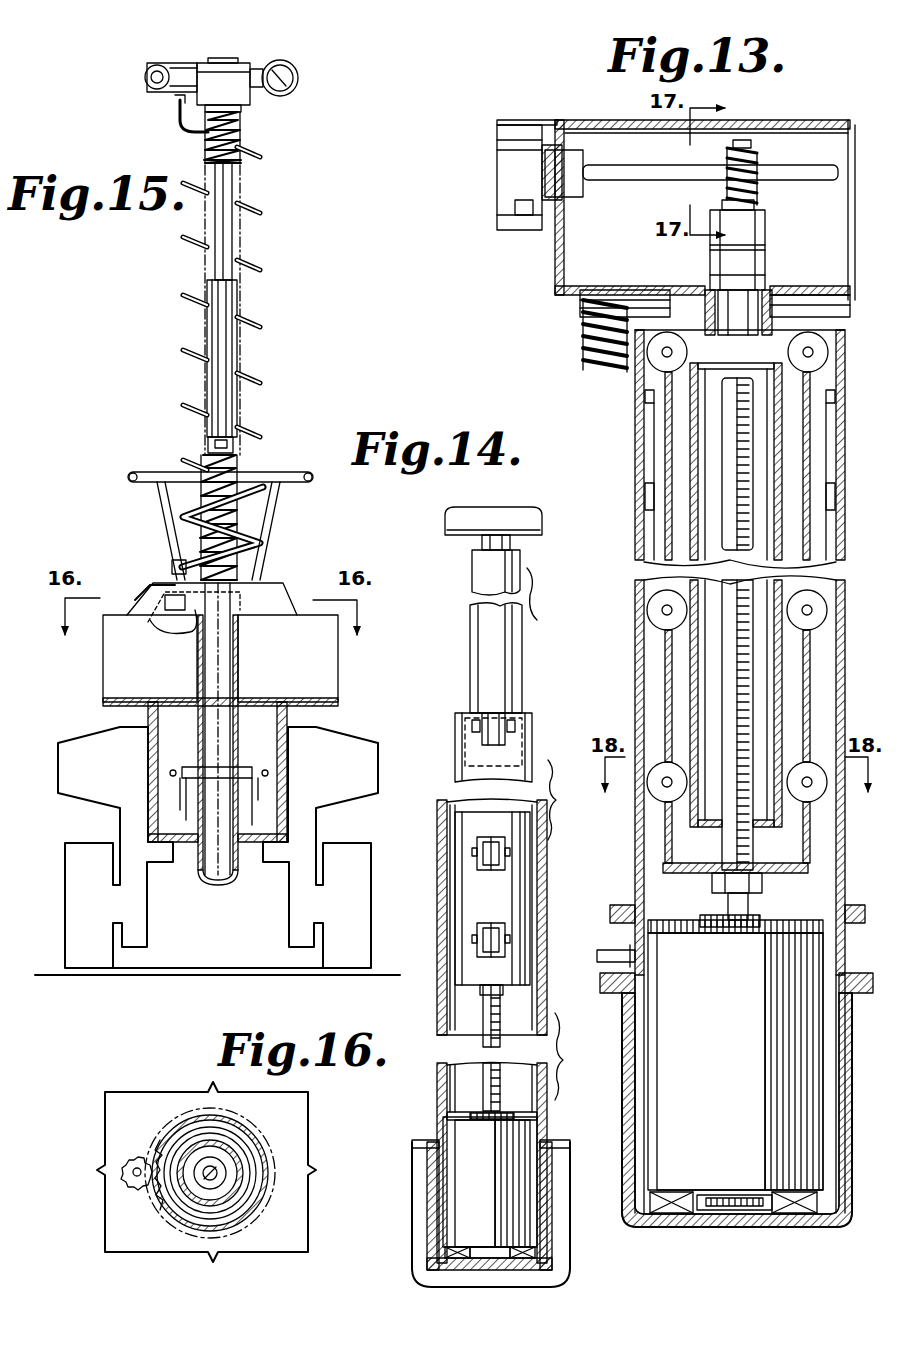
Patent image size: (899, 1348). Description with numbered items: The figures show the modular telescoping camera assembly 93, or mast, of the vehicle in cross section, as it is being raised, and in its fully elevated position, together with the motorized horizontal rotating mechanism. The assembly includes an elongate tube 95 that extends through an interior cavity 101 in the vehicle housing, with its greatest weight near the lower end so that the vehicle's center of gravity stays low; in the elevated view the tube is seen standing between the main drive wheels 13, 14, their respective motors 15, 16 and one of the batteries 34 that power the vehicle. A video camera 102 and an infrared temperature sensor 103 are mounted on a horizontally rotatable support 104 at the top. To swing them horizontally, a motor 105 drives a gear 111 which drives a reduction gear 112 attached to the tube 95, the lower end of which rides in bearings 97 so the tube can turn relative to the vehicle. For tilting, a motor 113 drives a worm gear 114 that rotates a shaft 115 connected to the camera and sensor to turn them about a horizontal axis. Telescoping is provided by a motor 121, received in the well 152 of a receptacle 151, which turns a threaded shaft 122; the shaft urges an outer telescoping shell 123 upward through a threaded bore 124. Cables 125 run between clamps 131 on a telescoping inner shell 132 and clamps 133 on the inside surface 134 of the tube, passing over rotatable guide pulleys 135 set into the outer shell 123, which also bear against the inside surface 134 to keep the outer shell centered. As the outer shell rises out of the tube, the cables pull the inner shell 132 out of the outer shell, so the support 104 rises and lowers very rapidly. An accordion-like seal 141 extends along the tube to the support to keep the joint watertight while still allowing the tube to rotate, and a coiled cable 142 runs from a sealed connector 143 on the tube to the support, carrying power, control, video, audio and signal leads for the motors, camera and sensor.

In FIG. 15, the main drive wheel 13 is at (70, 845).
In FIG. 15, the main drive wheel 14 is at (366, 845).
In FIG. 15, the motor 15 is at (80, 740).
In FIG. 15, the motor 16 is at (362, 745).
In FIG. 15, the battery 34 is at (268, 788).
In FIG. 15, the telescoping camera assembly 93 is at (135, 517).
In FIG. 13, the elongate tube 95 is at (635, 468).
In FIG. 14, the elongate tube 95 is at (437, 935).
In FIG. 15, the elongate tube 95 is at (238, 676).
In FIG. 16, the elongate tube 95 is at (250, 1215).
In FIG. 13, the bearings 97 is at (815, 1227).
In FIG. 15, the interior cavity 101 is at (277, 750).
In FIG. 13, the video camera 102 is at (518, 120).
In FIG. 15, the video camera 102 is at (292, 68).
In FIG. 15, the infrared temperature sensor 103 is at (146, 80).
In FIG. 13, the horizontally rotatable support 104 is at (780, 124).
In FIG. 14, the horizontally rotatable support 104 is at (518, 515).
In FIG. 15, the horizontally rotatable support 104 is at (221, 70).
In FIG. 16, the horizontally rotatable support 104 is at (137, 1098).
In FIG. 15, the motor 105 is at (165, 593).
In FIG. 15, the gear 111 is at (160, 612).
In FIG. 16, the gear 111 is at (136, 1190).
In FIG. 13, the reduction gear 112 is at (848, 910).
In FIG. 14, the reduction gear 112 is at (483, 1007).
In FIG. 15, the reduction gear 112 is at (192, 636).
In FIG. 13, the motor 113 is at (766, 228).
In FIG. 13, the worm gear 114 is at (752, 175).
In FIG. 13, the shaft 115 is at (638, 170).
In FIG. 13, the motor 121 is at (718, 1061).
In FIG. 14, the motor 121 is at (445, 1128).
In FIG. 13, the threaded shaft 122 is at (722, 845).
In FIG. 16, the threaded shaft 122 is at (215, 1170).
In FIG. 13, the outer telescoping shell 123 is at (700, 873).
In FIG. 14, the outer telescoping shell 123 is at (530, 925).
In FIG. 15, the outer telescoping shell 123 is at (237, 286).
In FIG. 16, the outer telescoping shell 123 is at (180, 1213).
In FIG. 13, the threaded bore 124 is at (750, 880).
In FIG. 13, the cables 125 is at (665, 697).
In FIG. 13, the clamps 131 is at (648, 490).
In FIG. 14, the clamps 131 is at (456, 763).
In FIG. 13, the telescoping inner shell 132 is at (690, 437).
In FIG. 14, the telescoping inner shell 132 is at (473, 652).
In FIG. 15, the telescoping inner shell 132 is at (232, 238).
In FIG. 16, the telescoping inner shell 132 is at (178, 1140).
In FIG. 13, the clamps 133 is at (645, 397).
In FIG. 13, the inside surface 134 is at (647, 508).
In FIG. 13, the guide pulleys 135 is at (647, 613).
In FIG. 14, the guide pulleys 135 is at (505, 862).
In FIG. 13, the accordion-like seal 141 is at (585, 352).
In FIG. 15, the accordion-like seal 141 is at (241, 134).
In FIG. 15, the coiled cable 142 is at (185, 350).
In FIG. 15, the sealed connector 143 is at (172, 567).
In FIG. 13, the receptacle 151 is at (722, 1222).
In FIG. 14, the receptacle 151 is at (497, 1270).
In FIG. 15, the receptacle 151 is at (228, 882).
In FIG. 14, the well 152 is at (452, 1205).